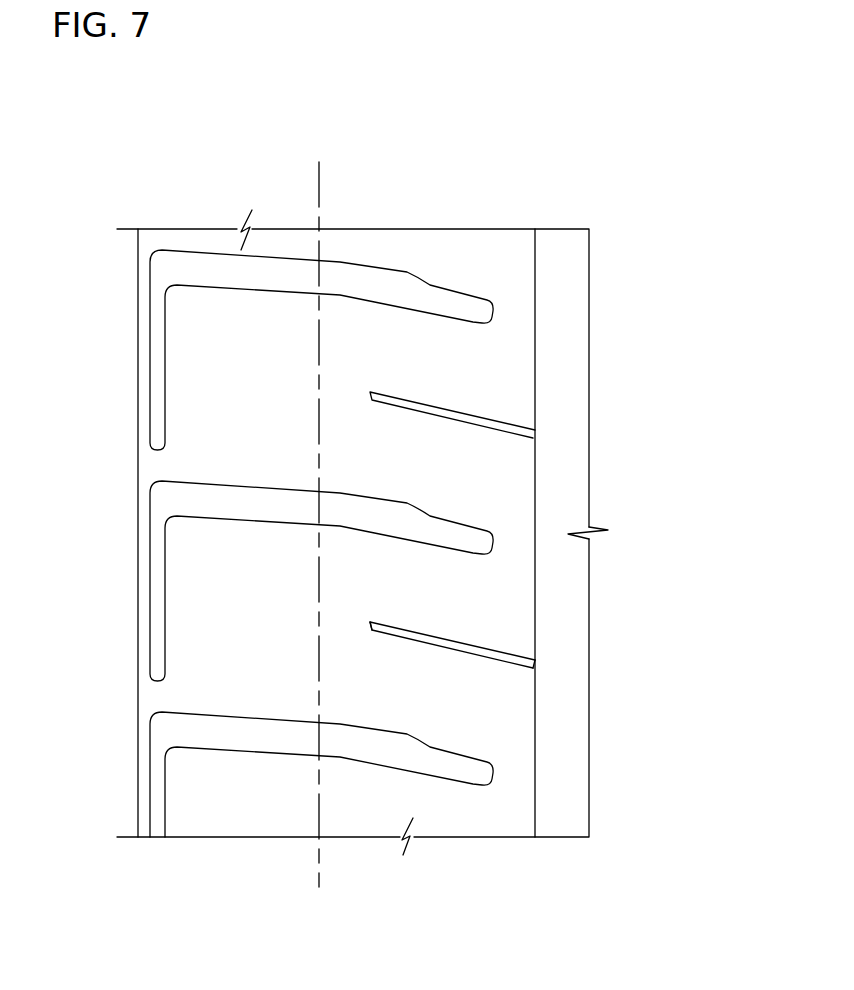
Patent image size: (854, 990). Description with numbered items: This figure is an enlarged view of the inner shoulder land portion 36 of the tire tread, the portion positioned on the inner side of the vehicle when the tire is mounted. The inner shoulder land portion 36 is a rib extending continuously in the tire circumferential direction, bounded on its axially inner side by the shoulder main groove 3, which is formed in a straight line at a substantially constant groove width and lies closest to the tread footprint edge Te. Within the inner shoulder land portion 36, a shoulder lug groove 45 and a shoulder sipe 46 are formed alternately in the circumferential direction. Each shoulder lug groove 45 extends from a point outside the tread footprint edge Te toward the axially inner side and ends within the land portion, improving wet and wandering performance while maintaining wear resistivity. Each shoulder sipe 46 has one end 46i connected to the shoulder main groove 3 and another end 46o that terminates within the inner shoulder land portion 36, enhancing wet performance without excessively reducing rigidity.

The shoulder main groove 3 is at (559, 267).
The tread footprint edge Te is at (323, 510).
The inner shoulder land portion 36 is at (397, 322).
The shoulder lug groove 45 is at (254, 273).
The shoulder sipe 46 is at (478, 415).
The other end of shoulder sipe 46o is at (372, 623).
The one end of shoulder sipe 46i is at (537, 666).